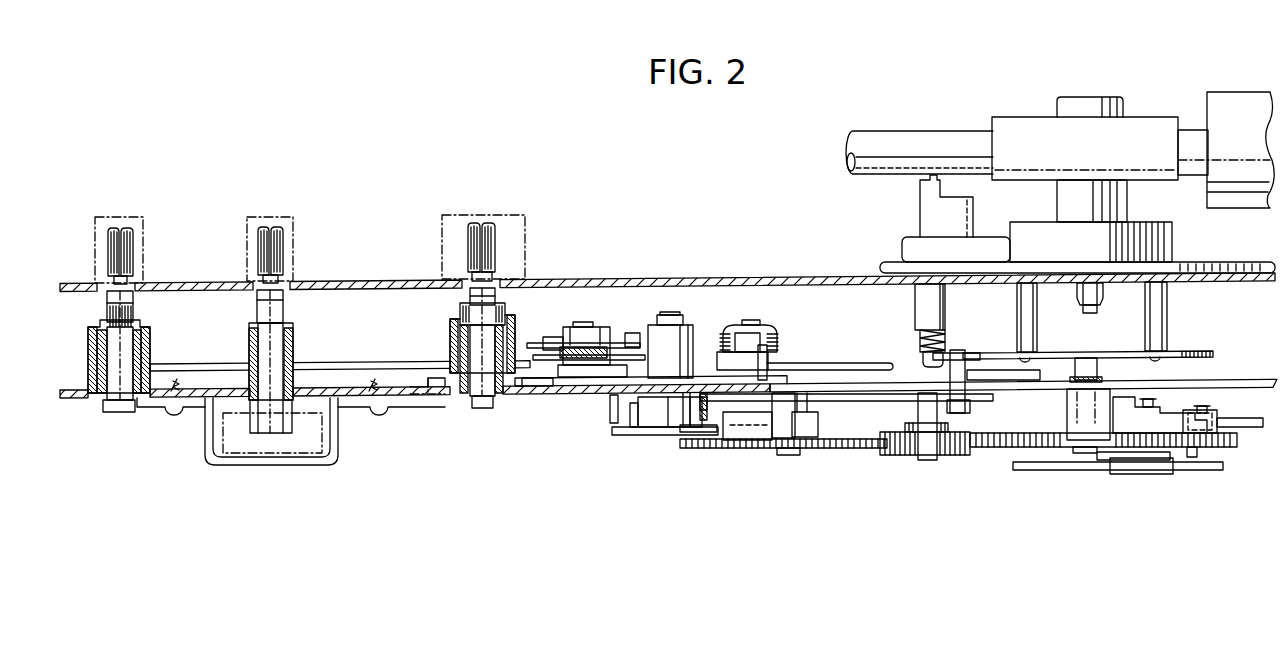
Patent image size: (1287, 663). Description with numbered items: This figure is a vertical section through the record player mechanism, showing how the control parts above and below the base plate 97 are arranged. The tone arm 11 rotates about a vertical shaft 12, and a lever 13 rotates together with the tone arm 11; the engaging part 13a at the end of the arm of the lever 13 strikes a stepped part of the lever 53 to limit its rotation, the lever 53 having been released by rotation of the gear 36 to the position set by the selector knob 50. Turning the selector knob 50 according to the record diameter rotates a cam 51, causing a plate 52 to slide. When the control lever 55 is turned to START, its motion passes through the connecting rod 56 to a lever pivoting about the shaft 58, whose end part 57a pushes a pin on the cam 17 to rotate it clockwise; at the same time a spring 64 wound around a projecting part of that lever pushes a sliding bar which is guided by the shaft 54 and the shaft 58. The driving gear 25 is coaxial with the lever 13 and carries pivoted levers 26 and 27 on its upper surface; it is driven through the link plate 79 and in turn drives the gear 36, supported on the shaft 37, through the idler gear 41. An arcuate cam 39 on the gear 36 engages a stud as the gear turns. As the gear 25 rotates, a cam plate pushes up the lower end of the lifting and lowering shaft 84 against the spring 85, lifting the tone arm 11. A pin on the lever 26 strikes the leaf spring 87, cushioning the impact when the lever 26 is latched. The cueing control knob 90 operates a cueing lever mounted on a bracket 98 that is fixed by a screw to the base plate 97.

The tone arm 11 is at (897, 135).
The vertical shaft 12 is at (1097, 305).
The lever 13 is at (1190, 351).
The engaging part 13a is at (957, 352).
The cam 17 is at (658, 418).
The driving gear 25 is at (1000, 448).
The lever 26 is at (1160, 410).
The lever 27 is at (1223, 420).
The gear 36 is at (710, 450).
The shaft 37 is at (780, 412).
The cam 39 is at (818, 423).
The idler gear 41 is at (902, 455).
The selector knob 50 is at (468, 213).
The cam 51 is at (450, 325).
The plate 52 is at (418, 388).
The lever 53 is at (837, 363).
The shaft 54 is at (752, 320).
The control lever 55 is at (130, 216).
The connecting rod 56 is at (218, 363).
The end part 57a is at (612, 407).
The shaft 58 is at (582, 322).
The spring 64 is at (602, 353).
The link plate 79 is at (1067, 470).
The lifting and lowering shaft 84 is at (930, 358).
The spring 85 is at (913, 335).
The leaf spring 87 is at (1122, 458).
The cueing control knob 90 is at (262, 216).
The base plate 97 is at (157, 400).
The bracket 98 is at (343, 435).